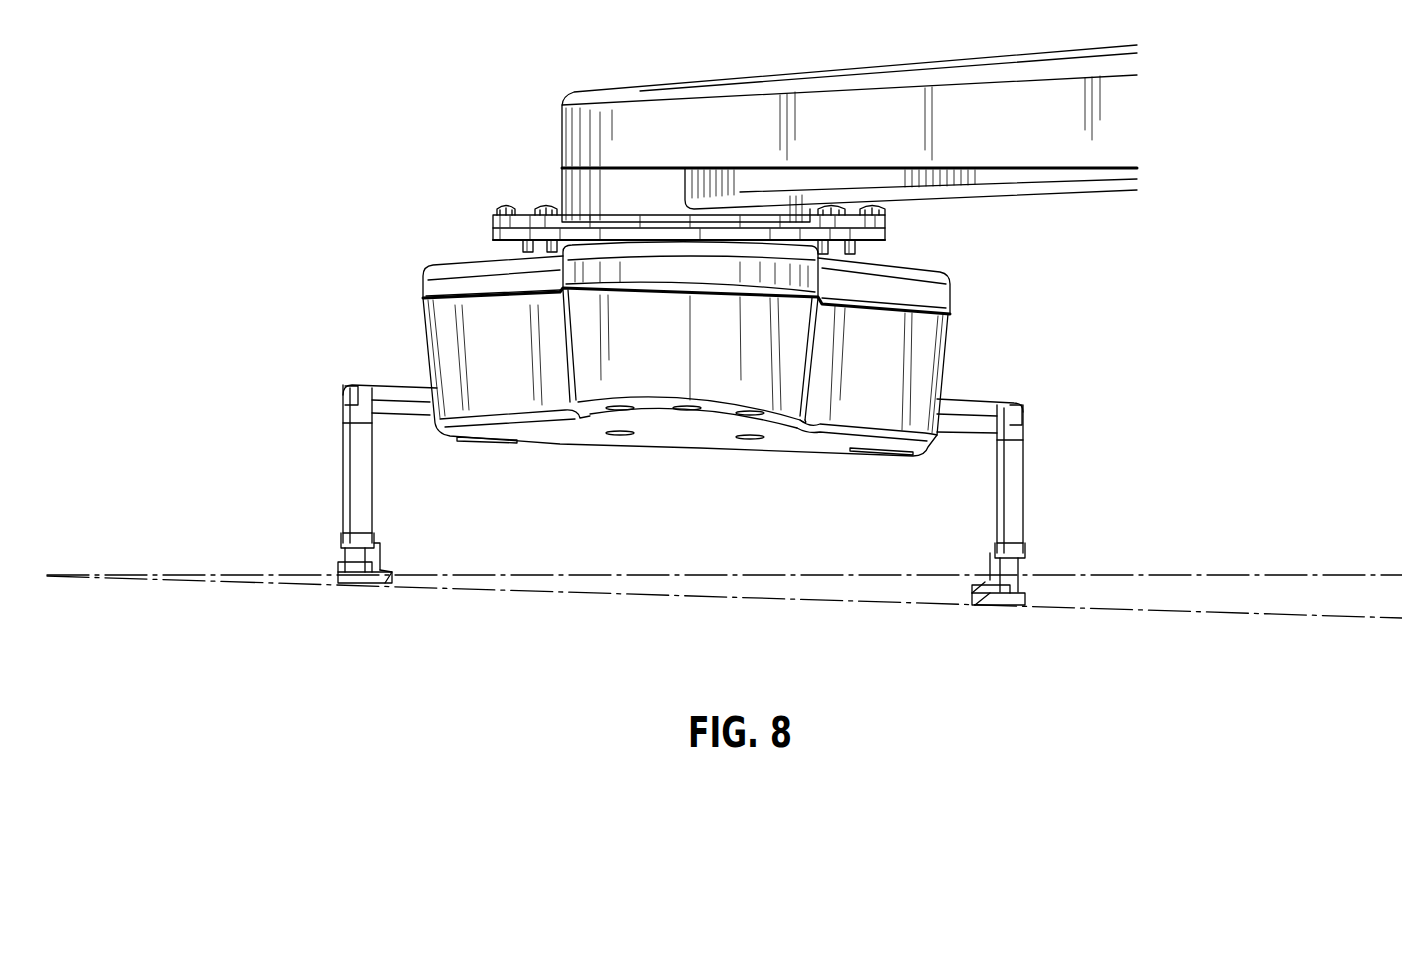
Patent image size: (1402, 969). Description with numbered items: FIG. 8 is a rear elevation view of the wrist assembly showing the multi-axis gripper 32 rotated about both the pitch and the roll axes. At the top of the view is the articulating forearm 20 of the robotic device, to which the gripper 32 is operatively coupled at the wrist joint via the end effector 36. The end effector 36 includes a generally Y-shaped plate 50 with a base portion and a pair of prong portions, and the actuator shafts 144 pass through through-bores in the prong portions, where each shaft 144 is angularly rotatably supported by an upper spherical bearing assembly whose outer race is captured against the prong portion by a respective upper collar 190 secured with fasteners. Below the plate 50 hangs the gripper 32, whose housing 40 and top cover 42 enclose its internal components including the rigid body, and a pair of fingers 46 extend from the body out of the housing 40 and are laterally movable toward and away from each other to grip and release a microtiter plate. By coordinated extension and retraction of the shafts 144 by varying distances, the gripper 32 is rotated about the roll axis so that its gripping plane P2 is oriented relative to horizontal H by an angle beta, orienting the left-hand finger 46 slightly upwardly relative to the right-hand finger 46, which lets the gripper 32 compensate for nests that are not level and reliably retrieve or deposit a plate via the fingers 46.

The articulating forearm 20 is at (840, 68).
The multi-axis gripper 32 is at (356, 210).
The end effector 36 is at (893, 234).
The housing 40 is at (947, 358).
The top cover 42 is at (953, 291).
The fingers 46 is at (343, 472).
The Y-shaped plate 50 is at (492, 230).
The shaft 144 is at (530, 247).
The upper collar 190 is at (492, 221).
The horizontal H is at (1297, 575).
The gripping plane P2 is at (1338, 615).